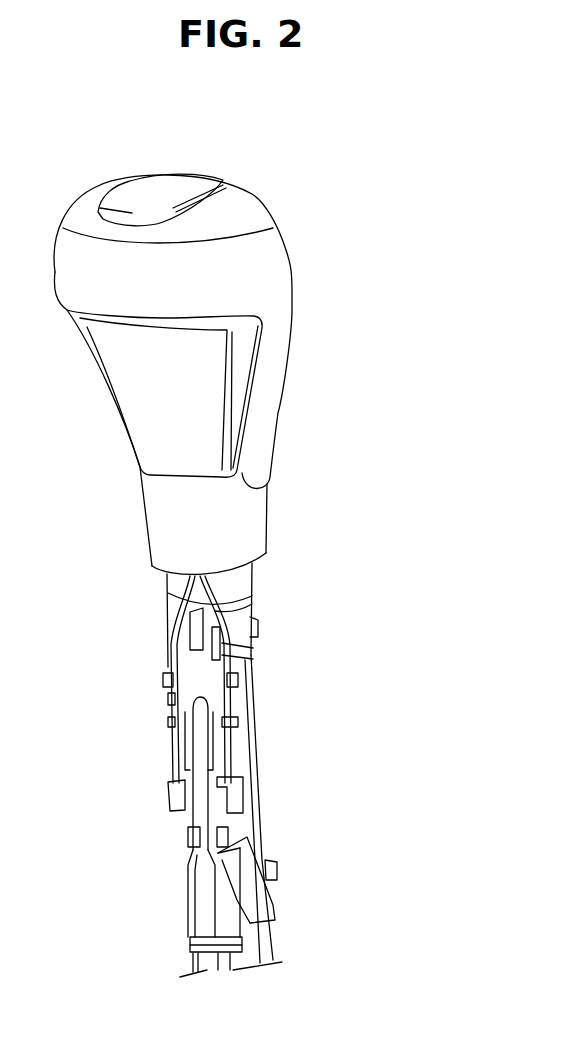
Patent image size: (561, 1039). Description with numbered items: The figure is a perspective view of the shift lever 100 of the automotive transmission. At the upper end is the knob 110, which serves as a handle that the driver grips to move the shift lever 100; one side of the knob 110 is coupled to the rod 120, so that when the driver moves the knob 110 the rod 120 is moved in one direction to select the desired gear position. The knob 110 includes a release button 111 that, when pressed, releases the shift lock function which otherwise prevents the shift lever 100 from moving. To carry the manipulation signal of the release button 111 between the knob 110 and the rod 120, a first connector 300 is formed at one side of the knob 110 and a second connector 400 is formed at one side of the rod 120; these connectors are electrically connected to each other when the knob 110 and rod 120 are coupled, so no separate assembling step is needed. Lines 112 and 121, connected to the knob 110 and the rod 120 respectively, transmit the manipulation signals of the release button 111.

The shift lever 100 is at (365, 572).
The knob 110 is at (273, 383).
The release button 111 is at (128, 388).
The line 112 is at (190, 582).
The rod 120 is at (255, 751).
The line 121 is at (240, 900).
The first connector 300 is at (163, 746).
The second connector 400 is at (175, 892).